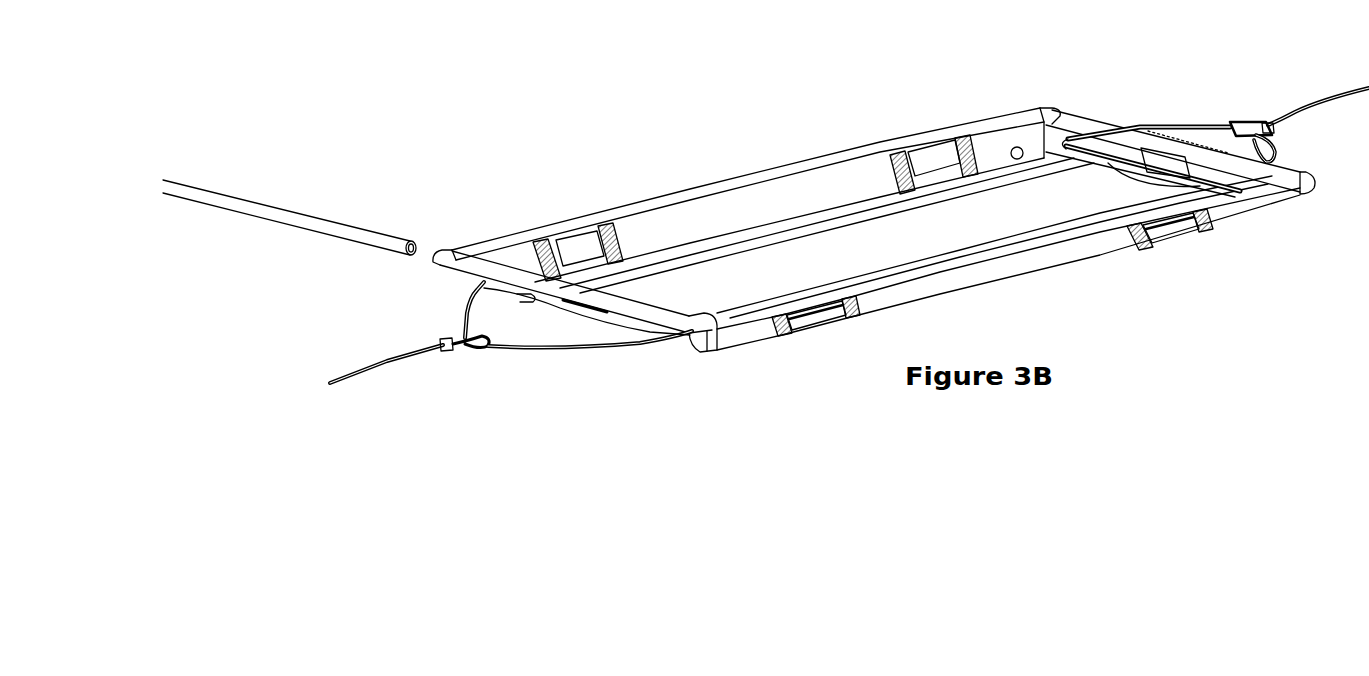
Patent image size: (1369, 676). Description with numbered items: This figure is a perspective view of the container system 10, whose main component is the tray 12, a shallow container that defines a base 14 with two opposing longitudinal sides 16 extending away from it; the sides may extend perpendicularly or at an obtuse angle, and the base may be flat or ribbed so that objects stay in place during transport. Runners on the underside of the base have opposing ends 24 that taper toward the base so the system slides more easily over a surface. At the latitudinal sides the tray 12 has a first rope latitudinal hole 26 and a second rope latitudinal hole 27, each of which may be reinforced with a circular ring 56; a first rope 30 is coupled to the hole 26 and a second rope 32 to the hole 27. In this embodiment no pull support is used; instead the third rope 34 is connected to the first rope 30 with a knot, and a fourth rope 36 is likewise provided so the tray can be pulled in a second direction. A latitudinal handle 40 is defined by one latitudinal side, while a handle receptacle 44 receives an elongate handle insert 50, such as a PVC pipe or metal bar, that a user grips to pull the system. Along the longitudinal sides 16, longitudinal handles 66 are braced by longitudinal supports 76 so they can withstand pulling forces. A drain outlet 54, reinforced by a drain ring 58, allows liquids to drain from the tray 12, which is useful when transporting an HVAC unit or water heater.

The container system 10 is at (1207, 25).
The tray 12 is at (1040, 104).
The base 14 is at (990, 242).
The longitudinal sides 16 is at (870, 229).
The opposing ends 24 is at (698, 337).
The first rope latitudinal hole 26 is at (478, 285).
The second rope latitudinal hole 27 is at (1072, 140).
The first rope 30 is at (560, 352).
The second rope 32 is at (1280, 149).
The third rope 34 is at (412, 361).
The fourth rope 36 is at (1322, 102).
The latitudinal handle 40 is at (1167, 162).
The handle receptacle 44 is at (457, 249).
The handle insert 50 is at (240, 203).
The drain outlet 54 is at (1016, 146).
The circular ring 56 is at (1225, 195).
The drain ring 58 is at (1009, 151).
The longitudinal handle 66 is at (572, 243).
The longitudinal supports 76 is at (605, 230).